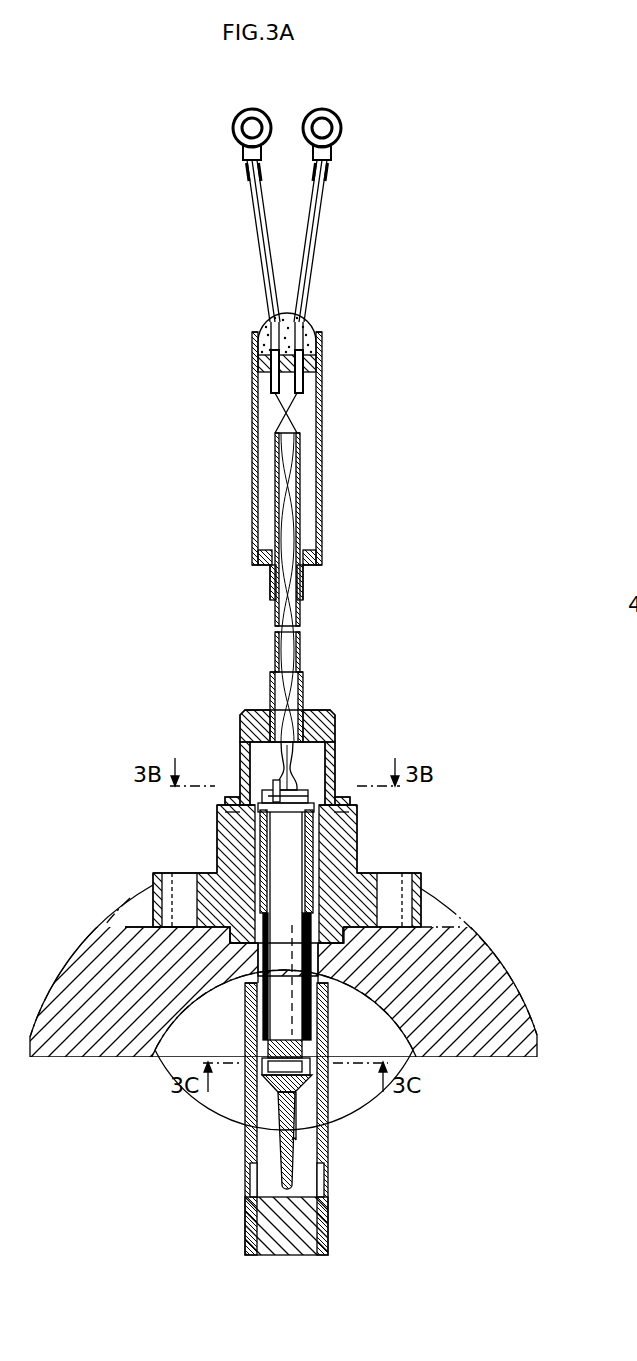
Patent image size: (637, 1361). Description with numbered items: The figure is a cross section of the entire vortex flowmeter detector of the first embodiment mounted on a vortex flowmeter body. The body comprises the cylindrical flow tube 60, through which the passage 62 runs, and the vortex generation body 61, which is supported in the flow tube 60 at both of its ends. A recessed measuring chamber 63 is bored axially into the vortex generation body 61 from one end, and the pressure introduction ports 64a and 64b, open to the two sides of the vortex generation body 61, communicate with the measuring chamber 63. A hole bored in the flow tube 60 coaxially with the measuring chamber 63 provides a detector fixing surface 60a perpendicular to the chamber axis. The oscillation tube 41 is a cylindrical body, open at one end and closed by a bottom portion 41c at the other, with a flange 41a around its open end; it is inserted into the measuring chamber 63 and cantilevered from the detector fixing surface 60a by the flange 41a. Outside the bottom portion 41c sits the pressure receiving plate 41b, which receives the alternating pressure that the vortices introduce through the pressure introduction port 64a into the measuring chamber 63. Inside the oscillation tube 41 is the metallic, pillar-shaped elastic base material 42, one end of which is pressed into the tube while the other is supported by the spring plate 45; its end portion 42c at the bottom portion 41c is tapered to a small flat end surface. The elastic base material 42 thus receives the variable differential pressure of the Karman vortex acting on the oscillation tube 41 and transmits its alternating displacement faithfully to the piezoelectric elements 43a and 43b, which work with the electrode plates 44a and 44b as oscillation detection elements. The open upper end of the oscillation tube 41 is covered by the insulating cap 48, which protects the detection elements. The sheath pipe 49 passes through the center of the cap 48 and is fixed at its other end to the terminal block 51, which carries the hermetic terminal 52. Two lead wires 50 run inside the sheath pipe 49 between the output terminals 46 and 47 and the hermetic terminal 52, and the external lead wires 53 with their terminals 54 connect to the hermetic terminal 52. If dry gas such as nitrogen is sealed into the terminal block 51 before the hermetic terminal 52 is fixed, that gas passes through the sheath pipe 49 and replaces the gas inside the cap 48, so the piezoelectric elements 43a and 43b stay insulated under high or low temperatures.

The oscillation tube 41 is at (411, 862).
The flange 41a is at (420, 890).
The pressure receiving plate 41b is at (296, 1140).
The bottom portion 41c is at (314, 1096).
The elastic base material 42 is at (316, 859).
The end portion 42c is at (311, 1028).
The piezoelectric element 43a is at (354, 843).
The piezoelectric element 43b is at (225, 843).
The electrode plate 44a is at (352, 808).
The electrode plate 44b is at (219, 823).
The spring plate 45 is at (312, 1072).
The output terminal 46 is at (303, 790).
The output terminal 47 is at (272, 792).
The cap 48 is at (318, 737).
The sheath pipe 49 is at (302, 620).
The lead wires 50 is at (288, 428).
The terminal block 51 is at (322, 392).
The hermetic terminal 52 is at (320, 365).
The external lead wires 53 is at (320, 248).
The terminals 54 is at (307, 113).
The vortex flowmeter body (flow tube) 60 is at (477, 943).
The detector fixing surface 60a is at (128, 930).
The vortex generation body 61 is at (250, 1218).
The passage 62 is at (152, 1088).
The measuring chamber 63 is at (262, 1128).
The pressure introduction port 64a is at (249, 1183).
The pressure introduction port 64b is at (240, 1000).